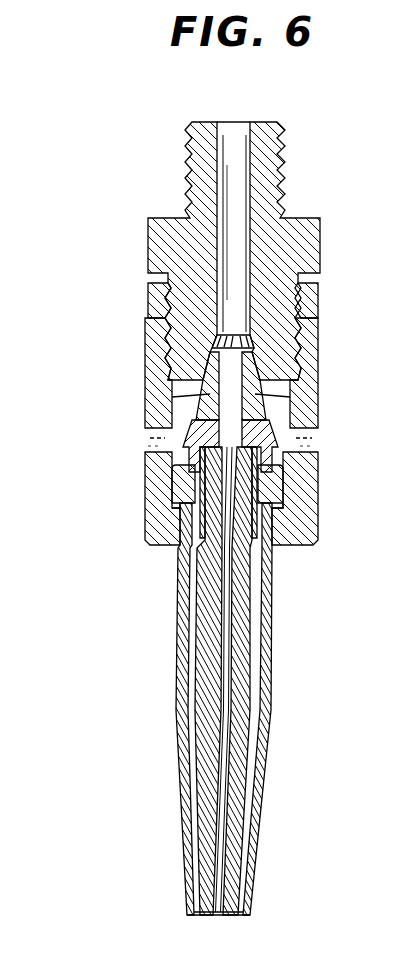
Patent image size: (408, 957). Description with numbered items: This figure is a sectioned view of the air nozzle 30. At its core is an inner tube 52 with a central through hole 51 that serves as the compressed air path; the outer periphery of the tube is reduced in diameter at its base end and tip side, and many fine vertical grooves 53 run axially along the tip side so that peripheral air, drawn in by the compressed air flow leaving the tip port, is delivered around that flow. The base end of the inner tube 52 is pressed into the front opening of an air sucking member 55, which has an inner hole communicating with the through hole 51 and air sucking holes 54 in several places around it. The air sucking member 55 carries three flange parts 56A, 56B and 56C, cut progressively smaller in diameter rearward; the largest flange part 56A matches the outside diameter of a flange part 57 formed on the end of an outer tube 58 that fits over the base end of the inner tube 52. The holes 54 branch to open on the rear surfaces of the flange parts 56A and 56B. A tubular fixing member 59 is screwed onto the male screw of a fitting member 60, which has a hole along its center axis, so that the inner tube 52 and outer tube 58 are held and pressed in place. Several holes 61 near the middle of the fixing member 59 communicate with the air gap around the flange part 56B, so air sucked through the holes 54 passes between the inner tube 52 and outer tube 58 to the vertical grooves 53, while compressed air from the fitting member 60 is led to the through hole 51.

The air nozzle 30 is at (118, 568).
The through hole 51 is at (223, 658).
The inner tube 52 is at (237, 753).
The vertical grooves 53 is at (237, 838).
The air sucking holes 54 is at (198, 512).
The air sucking member 55 is at (172, 399).
The flange part 56A is at (266, 490).
The flange part 56B is at (270, 437).
The flange part 56C is at (253, 370).
The flange part 57 is at (298, 508).
The outer tube 58 is at (272, 580).
The tubular fixing member 59 is at (153, 527).
The fitting member 60 is at (160, 240).
The holes 61 is at (145, 442).